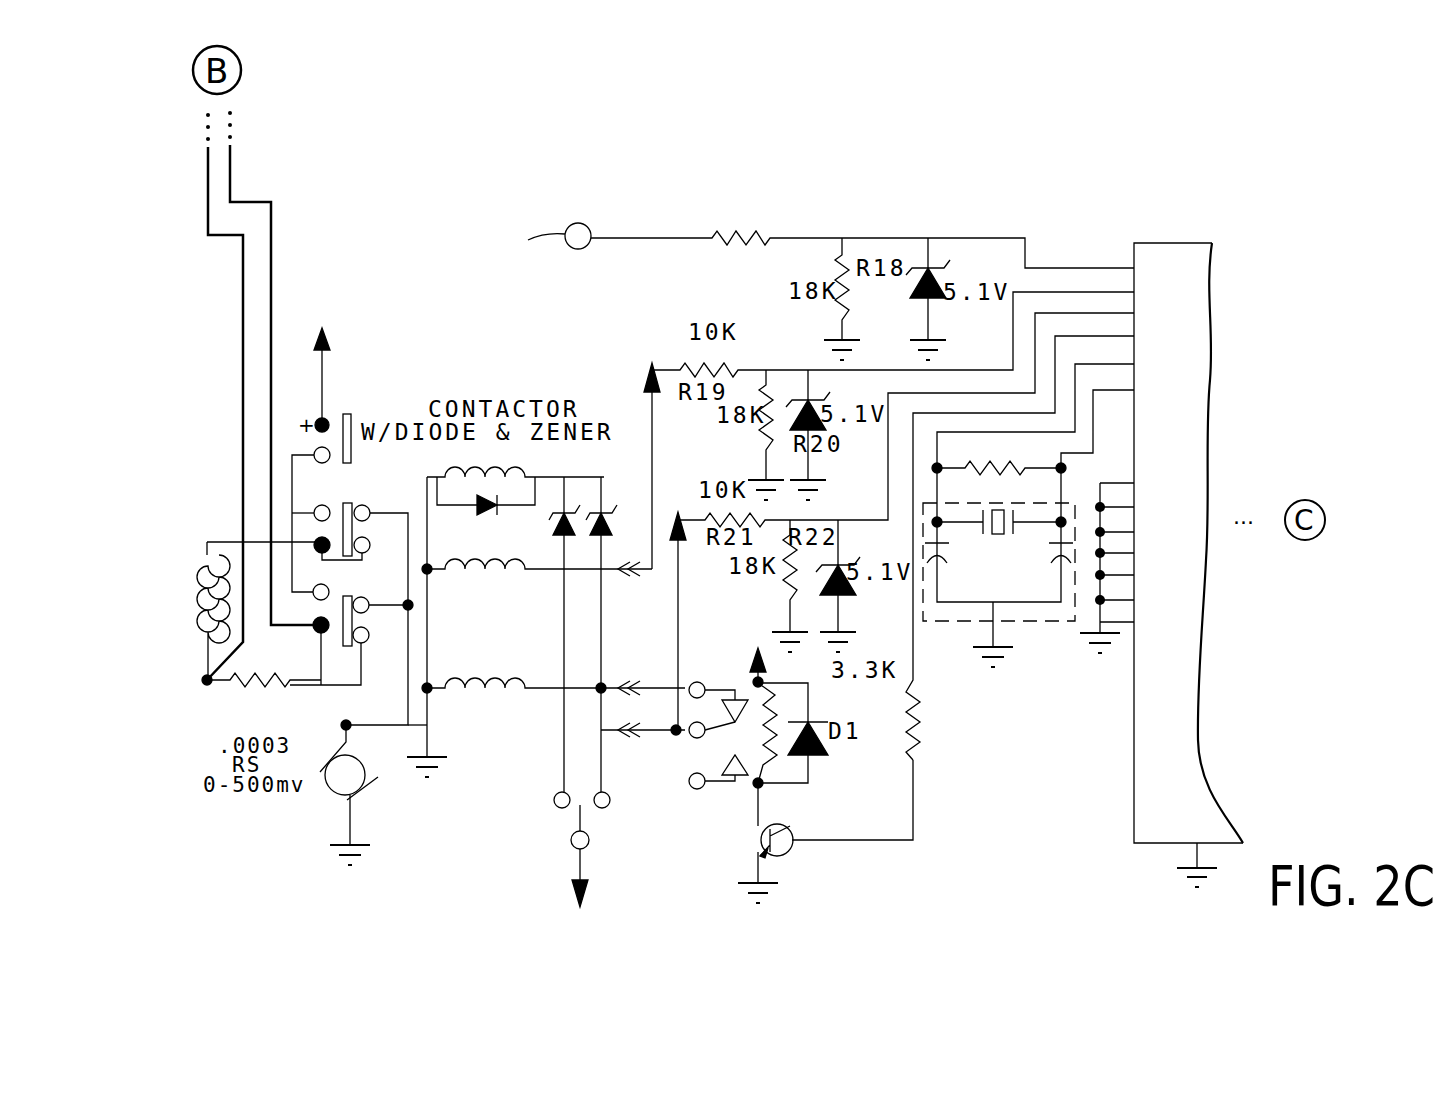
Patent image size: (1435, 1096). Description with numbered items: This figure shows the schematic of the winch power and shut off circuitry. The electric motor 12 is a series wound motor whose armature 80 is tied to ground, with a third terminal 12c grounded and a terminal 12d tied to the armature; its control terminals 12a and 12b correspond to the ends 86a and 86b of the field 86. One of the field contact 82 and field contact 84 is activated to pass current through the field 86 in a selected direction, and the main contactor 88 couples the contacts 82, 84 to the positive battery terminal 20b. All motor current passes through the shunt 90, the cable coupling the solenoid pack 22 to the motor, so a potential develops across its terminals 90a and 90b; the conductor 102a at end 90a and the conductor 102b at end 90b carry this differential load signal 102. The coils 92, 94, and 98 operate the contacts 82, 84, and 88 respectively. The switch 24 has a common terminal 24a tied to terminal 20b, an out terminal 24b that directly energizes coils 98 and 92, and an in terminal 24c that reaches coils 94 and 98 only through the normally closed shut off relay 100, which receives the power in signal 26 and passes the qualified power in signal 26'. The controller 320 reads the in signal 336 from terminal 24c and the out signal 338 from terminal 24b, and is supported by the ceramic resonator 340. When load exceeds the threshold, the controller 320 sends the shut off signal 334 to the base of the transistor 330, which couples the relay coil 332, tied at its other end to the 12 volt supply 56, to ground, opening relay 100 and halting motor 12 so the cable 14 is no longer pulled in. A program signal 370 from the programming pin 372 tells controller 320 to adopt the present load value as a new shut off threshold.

The load signal 102 is at (278, 222).
The conductor 102a is at (243, 302).
The conductor 102b is at (232, 190).
The electric motor 12 is at (348, 392).
The control terminal 12a is at (207, 506).
The control terminal 12b is at (184, 744).
The third terminal 12c is at (345, 820).
The terminal 12d is at (358, 728).
The battery terminal 20b is at (320, 400).
The main contactor 88 is at (346, 412).
The field contact 82 is at (340, 510).
The field contact 84 is at (328, 612).
The field 86 is at (202, 592).
The end of field 86a is at (213, 542).
The end of field 86b is at (205, 680).
The shunt 90 is at (272, 668).
The shunt terminal 90a is at (228, 686).
The shunt terminal 90b is at (310, 698).
The armature 80 is at (345, 800).
The coil 98 is at (520, 470).
The coil 92 is at (487, 580).
The coil 94 is at (497, 680).
The solenoid pack 22 is at (568, 392).
The out signal 338 is at (645, 400).
The in signal 336 is at (708, 605).
The switch 24 is at (585, 782).
The common terminal 24a is at (582, 820).
The out terminal 24b is at (557, 737).
The in terminal 24c is at (604, 745).
The power in signal 26 is at (672, 735).
The qualified power in signal 26' is at (643, 691).
The shut off relay 100 is at (686, 782).
The 12 volt supply 56 is at (757, 682).
The transistor 330 is at (785, 852).
The coil 332 is at (760, 755).
The shut off signal 334 is at (915, 792).
The ceramic resonator 340 is at (996, 535).
The controller 320 is at (1130, 735).
The cable 14 is at (1211, 865).
The program signal 370 is at (613, 238).
The programming pin 372 is at (534, 257).